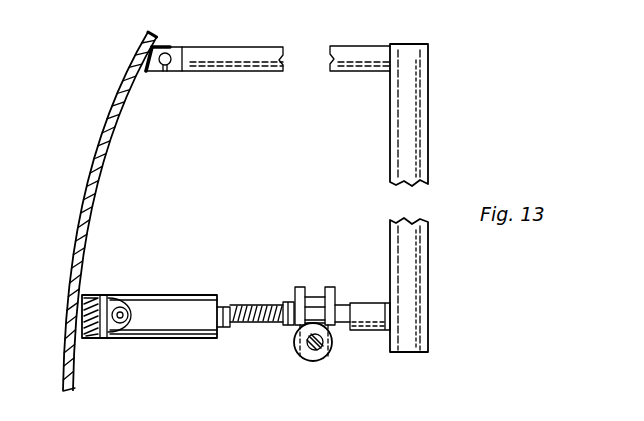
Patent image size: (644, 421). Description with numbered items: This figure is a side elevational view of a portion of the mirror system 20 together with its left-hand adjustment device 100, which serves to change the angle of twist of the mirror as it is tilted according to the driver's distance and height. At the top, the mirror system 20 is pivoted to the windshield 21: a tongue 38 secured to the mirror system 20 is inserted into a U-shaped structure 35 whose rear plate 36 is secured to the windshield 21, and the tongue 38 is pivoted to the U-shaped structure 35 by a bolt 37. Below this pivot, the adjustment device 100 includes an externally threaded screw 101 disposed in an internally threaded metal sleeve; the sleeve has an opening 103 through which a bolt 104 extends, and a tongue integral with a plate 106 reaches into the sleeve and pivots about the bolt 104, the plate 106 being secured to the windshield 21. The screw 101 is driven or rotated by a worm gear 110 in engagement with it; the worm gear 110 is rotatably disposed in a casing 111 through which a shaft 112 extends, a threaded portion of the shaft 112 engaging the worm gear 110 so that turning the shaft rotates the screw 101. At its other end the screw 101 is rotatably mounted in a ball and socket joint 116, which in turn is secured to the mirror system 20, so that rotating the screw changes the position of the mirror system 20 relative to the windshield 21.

The mirror system 20 is at (432, 139).
The windshield 21 is at (88, 170).
The U-shaped structure 35 is at (155, 72).
The rear plate 36 is at (160, 46).
The bolt 37 is at (165, 66).
The tongue 38 is at (252, 53).
The adjustment device 100 is at (254, 294).
The screw 101 is at (251, 329).
The opening 103 is at (122, 308).
The bolt 104 is at (127, 311).
The plate 106 is at (83, 336).
The worm gear 110 is at (315, 296).
The casing 111 is at (332, 292).
The shaft 112 is at (310, 348).
The ball and socket joint 116 is at (371, 316).